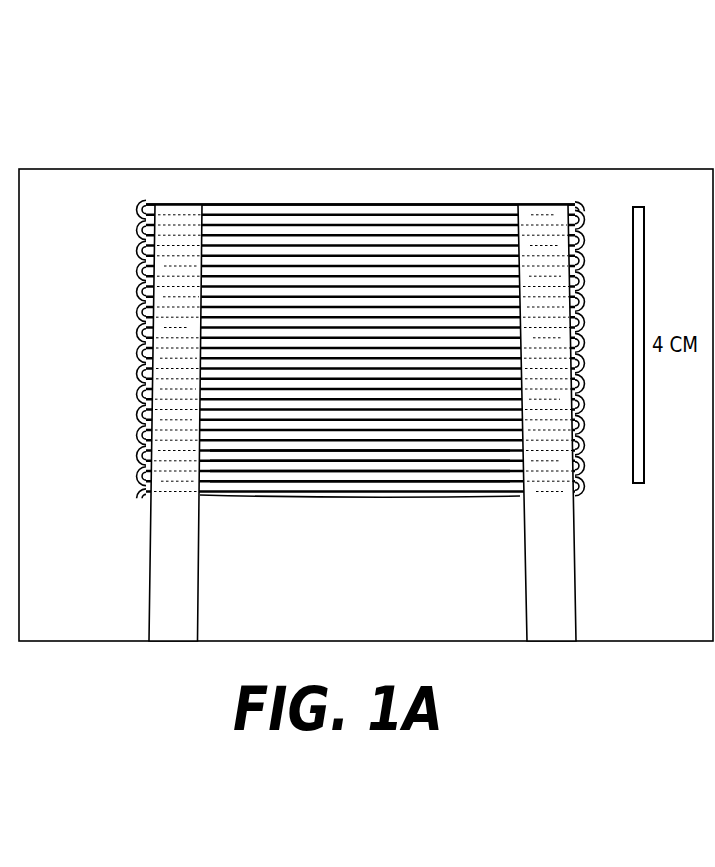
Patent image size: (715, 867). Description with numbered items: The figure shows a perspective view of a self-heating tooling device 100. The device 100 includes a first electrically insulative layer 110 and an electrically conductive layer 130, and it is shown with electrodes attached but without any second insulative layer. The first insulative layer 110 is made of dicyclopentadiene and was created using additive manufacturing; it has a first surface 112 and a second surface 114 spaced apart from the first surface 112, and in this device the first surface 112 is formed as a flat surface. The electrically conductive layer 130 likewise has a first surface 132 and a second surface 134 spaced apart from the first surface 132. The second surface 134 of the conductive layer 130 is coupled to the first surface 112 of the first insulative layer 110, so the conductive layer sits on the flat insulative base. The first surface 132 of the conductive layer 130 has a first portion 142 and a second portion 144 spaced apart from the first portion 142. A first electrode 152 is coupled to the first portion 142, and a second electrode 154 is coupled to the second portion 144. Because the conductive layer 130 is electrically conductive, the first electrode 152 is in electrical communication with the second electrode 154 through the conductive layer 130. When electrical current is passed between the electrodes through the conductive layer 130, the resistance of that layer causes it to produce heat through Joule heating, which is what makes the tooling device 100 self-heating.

The self-heating tooling device 100 is at (580, 107).
The first electrically insulative layer 110 is at (361, 359).
The first surface 112 is at (262, 481).
The second surface 114 is at (291, 498).
The electrically conductive layer 130 is at (372, 475).
The first surface 132 is at (447, 452).
The second surface 134 is at (407, 473).
The first portion 142 is at (216, 202).
The second portion 144 is at (501, 202).
The first electrode 152 is at (147, 548).
The second electrode 154 is at (578, 572).